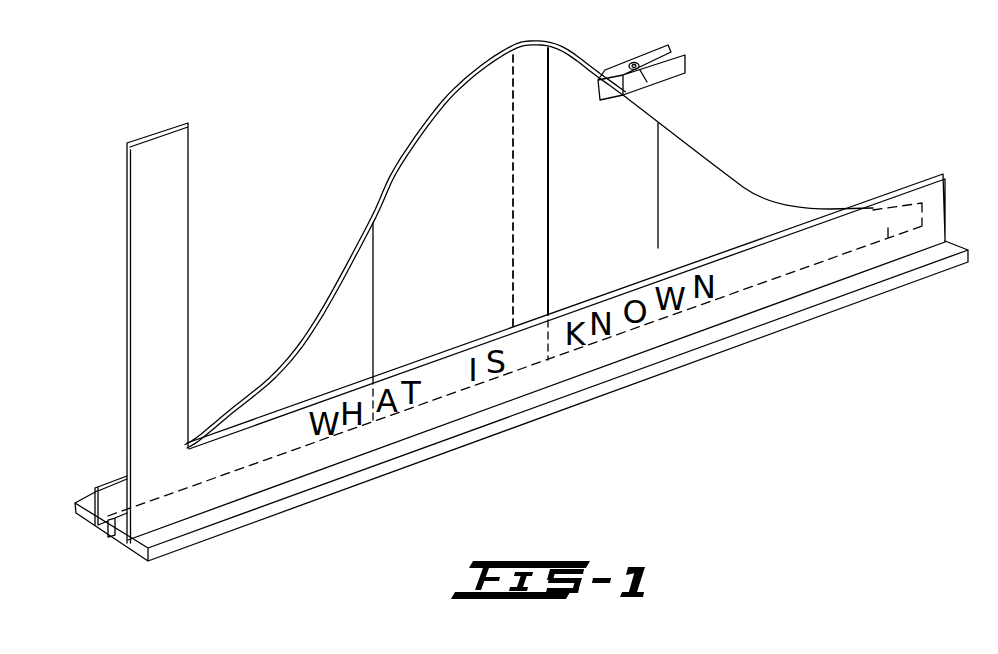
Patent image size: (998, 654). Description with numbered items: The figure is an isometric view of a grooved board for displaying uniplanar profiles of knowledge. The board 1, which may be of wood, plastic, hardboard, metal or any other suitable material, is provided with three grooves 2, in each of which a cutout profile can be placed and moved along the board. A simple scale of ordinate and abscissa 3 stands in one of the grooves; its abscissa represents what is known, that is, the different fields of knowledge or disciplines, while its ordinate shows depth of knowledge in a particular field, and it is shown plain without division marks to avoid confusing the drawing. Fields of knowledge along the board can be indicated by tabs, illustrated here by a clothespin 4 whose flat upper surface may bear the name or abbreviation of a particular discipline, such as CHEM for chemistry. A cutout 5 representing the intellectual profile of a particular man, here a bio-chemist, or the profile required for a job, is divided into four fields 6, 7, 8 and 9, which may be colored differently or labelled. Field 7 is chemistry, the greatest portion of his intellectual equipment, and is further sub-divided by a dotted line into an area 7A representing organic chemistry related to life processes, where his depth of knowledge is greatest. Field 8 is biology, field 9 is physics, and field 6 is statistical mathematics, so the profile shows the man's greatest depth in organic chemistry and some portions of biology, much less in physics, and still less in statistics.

The board 1 is at (262, 522).
The grooves 2 is at (127, 542).
The scale of ordinate and abscissa 3 is at (188, 203).
The clothespin 4 is at (687, 54).
The cutout 5 is at (516, 46).
The field 6 is at (326, 365).
The field 7 is at (468, 278).
The area 7A is at (548, 166).
The field 8 is at (608, 215).
The field 9 is at (713, 205).